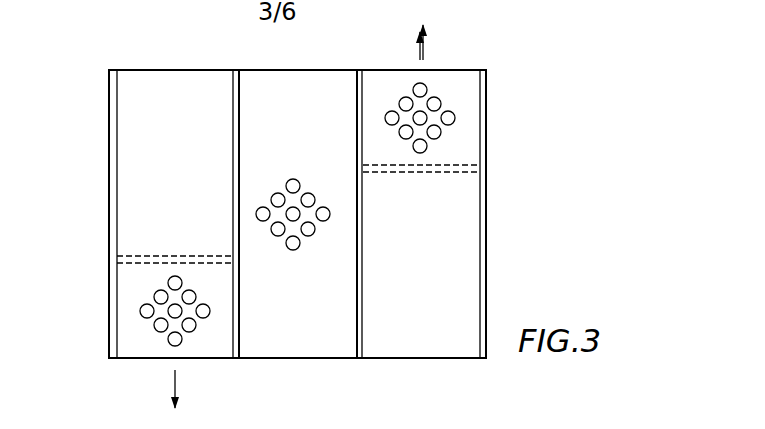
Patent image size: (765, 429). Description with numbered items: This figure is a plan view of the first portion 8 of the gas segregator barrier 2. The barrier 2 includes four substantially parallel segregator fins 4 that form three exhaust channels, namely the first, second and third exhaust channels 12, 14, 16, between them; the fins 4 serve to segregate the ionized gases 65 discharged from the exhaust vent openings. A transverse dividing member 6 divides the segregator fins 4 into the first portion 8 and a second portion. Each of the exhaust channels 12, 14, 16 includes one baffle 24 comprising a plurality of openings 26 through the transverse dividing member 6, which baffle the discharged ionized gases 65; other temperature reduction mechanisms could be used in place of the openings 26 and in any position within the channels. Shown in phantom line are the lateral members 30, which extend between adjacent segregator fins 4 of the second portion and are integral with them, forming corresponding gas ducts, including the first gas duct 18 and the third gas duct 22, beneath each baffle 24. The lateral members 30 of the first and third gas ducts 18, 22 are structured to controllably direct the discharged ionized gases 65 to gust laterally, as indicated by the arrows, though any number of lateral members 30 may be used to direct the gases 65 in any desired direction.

The gas segregator barrier 2 is at (225, 394).
The segregator fins 4 is at (109, 96).
The transverse dividing member 6 is at (156, 109).
The first portion 8 is at (100, 188).
The first exhaust channel 12 is at (180, 100).
The second exhaust channel 14 is at (313, 105).
The third exhaust channel 16 is at (468, 108).
The first gas duct 18 is at (130, 360).
The third gas duct 22 is at (395, 70).
The baffle 24 is at (146, 296).
The openings 26 is at (184, 284).
The lateral members 30 is at (168, 255).
The ionized gases 65 is at (424, 46).